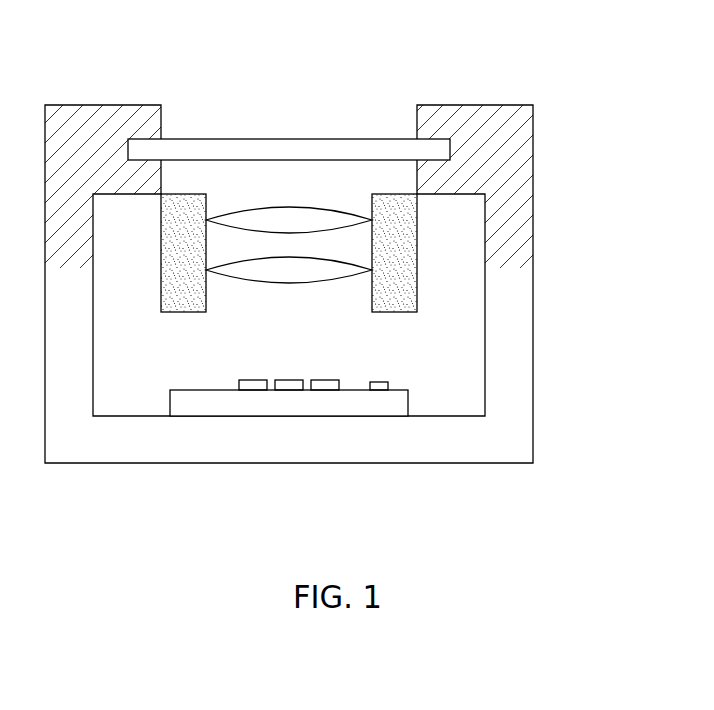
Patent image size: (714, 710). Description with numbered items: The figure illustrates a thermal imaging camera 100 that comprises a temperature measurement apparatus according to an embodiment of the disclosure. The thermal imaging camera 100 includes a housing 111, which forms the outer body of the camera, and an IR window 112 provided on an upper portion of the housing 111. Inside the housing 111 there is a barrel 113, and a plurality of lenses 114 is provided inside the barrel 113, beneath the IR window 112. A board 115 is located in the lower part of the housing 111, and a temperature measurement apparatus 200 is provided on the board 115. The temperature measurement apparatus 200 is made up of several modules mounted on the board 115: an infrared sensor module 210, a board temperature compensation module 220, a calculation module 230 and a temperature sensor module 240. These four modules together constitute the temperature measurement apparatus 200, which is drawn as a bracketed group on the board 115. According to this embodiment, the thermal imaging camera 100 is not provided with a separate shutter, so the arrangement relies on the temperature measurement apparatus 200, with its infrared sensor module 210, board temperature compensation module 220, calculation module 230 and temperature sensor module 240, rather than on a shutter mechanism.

The thermal imaging camera 100 is at (93, 37).
The housing 111 is at (467, 108).
The IR window 112 is at (283, 139).
The barrel 113 is at (410, 241).
The lenses 114 is at (312, 220).
The board 115 is at (197, 400).
The temperature measurement apparatus 200 is at (307, 457).
The infrared sensor module 210 is at (252, 386).
The board temperature compensation module 220 is at (291, 386).
The calculation module 230 is at (327, 386).
The temperature sensor module 240 is at (392, 445).